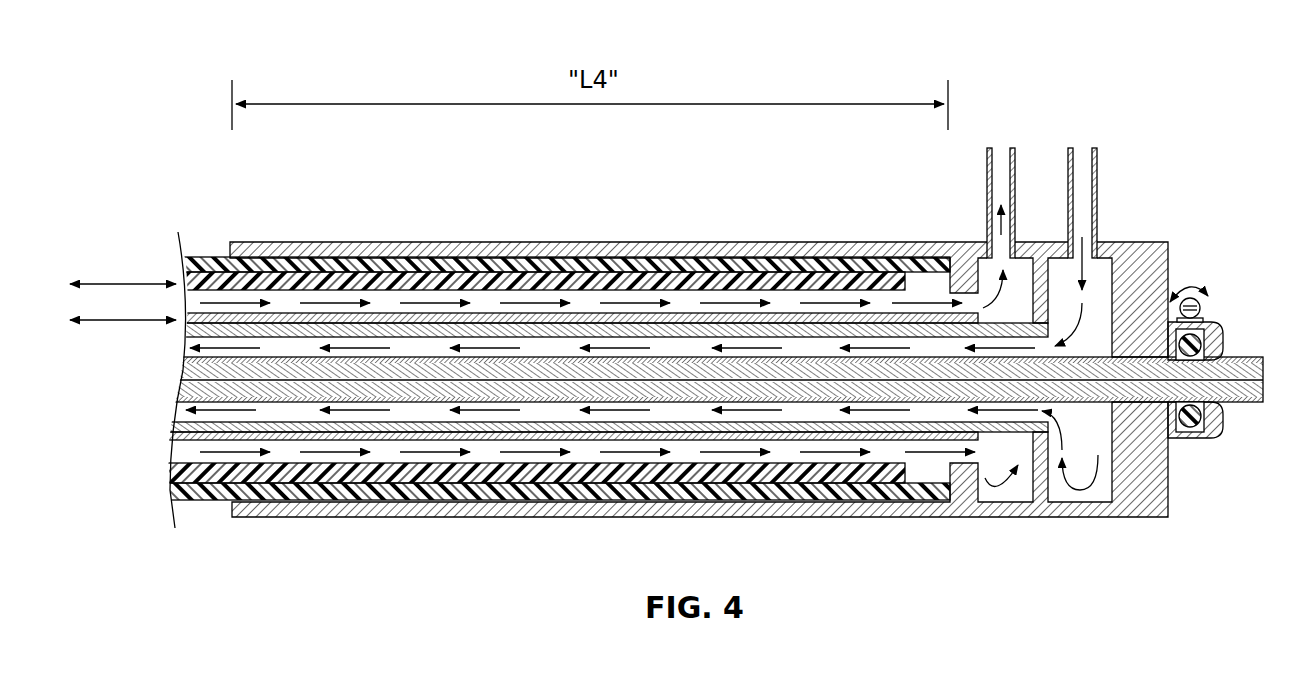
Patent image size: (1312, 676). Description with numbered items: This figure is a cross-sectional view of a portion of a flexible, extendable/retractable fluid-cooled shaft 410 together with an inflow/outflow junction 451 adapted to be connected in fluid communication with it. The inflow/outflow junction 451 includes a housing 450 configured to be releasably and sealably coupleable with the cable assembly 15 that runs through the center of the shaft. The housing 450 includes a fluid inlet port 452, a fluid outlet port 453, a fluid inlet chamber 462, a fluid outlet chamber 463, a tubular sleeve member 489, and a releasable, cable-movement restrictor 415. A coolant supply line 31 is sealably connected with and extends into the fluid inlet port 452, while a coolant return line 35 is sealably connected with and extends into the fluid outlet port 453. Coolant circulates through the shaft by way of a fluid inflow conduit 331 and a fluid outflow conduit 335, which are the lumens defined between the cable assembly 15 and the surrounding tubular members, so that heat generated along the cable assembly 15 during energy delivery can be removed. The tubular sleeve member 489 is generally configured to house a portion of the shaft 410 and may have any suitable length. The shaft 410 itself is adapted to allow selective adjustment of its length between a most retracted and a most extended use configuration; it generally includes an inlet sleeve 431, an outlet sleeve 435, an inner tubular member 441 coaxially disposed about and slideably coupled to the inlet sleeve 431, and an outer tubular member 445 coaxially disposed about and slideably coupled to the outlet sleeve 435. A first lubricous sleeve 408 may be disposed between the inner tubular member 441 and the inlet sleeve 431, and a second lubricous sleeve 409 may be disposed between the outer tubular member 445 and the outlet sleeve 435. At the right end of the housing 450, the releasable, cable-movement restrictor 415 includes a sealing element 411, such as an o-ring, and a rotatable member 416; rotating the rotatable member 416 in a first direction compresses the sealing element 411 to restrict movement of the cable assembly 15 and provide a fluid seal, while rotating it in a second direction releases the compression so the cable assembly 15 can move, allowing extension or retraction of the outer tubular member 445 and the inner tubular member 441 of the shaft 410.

The cable assembly 15 is at (155, 378).
The coolant supply line 31 is at (1097, 178).
The coolant return line 35 is at (987, 178).
The fluid inflow conduit 331 is at (688, 350).
The fluid outflow conduit 335 is at (780, 305).
The first lubricous sleeve 408 is at (168, 434).
The second lubricous sleeve 409 is at (185, 276).
The flexible, extendable/retractable fluid-cooled shaft 410 is at (202, 540).
The sealing element 411 is at (1210, 416).
The releasable, cable-movement restrictor 415 is at (1215, 276).
The rotatable member 416 is at (1205, 302).
The inlet sleeve 431 is at (170, 427).
The outlet sleeve 435 is at (185, 283).
The inner tubular member 441 is at (167, 440).
The outer tubular member 445 is at (185, 268).
The housing 450 is at (1158, 486).
The inflow/outflow junction 451 is at (1197, 150).
The fluid inlet port 452 is at (1100, 256).
The fluid outlet port 453 is at (980, 256).
The fluid inlet chamber 462 is at (1090, 492).
The fluid outlet chamber 463 is at (1013, 490).
The tubular sleeve member 489 is at (312, 238).